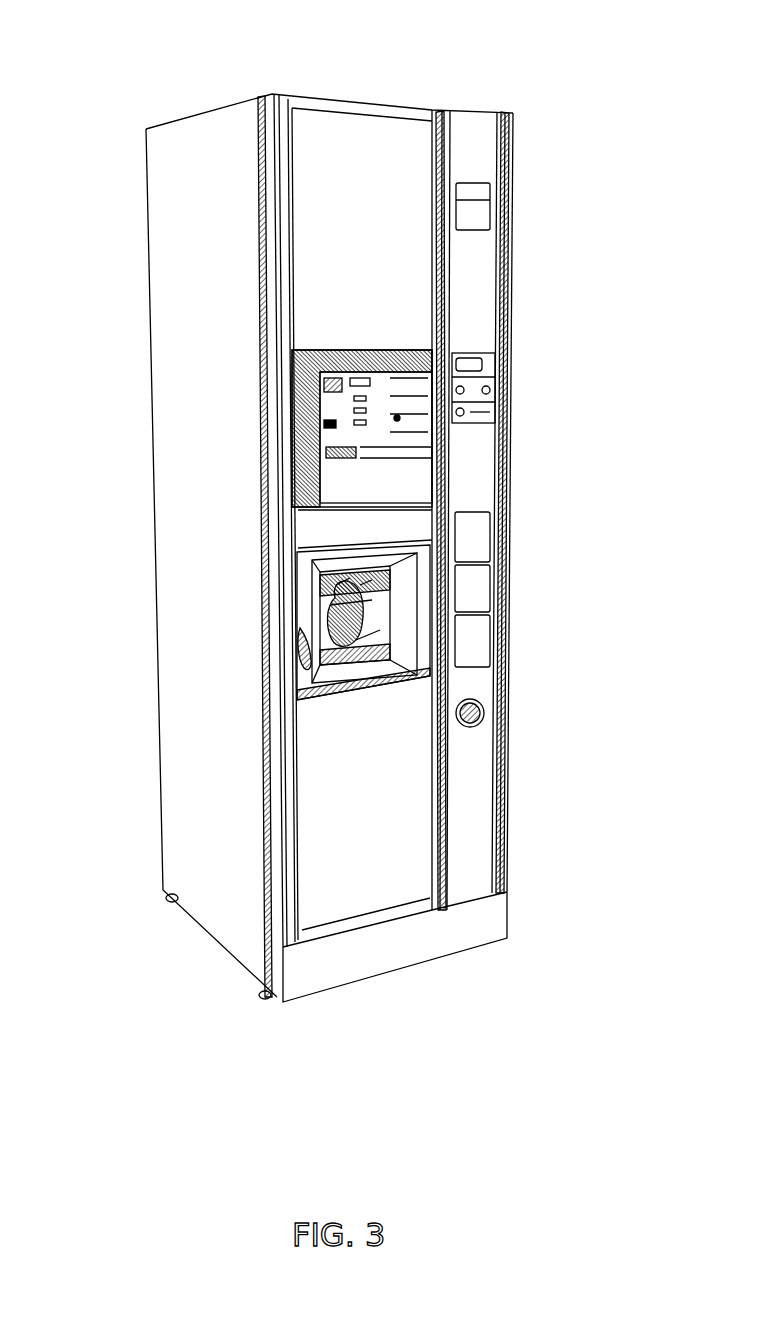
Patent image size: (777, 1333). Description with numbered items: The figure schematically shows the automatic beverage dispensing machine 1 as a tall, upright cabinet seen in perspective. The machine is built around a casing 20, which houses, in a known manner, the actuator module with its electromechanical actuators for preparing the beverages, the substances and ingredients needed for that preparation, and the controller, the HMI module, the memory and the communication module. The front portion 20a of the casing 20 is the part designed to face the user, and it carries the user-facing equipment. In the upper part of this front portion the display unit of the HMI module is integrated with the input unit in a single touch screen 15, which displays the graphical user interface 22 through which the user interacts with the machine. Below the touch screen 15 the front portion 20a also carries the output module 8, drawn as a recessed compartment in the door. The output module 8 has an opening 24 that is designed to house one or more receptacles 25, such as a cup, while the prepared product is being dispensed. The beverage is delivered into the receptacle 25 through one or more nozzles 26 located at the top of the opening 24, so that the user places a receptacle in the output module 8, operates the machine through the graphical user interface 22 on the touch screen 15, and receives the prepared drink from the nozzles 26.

The automatic beverage dispensing machine 1 is at (373, 508).
The casing 20 is at (170, 248).
The front portion 20a is at (475, 808).
The touch screen 15 is at (316, 428).
The graphical user interface 22 is at (377, 498).
The nozzles 26 is at (368, 578).
The opening 24 is at (330, 640).
The receptacles 25 is at (350, 662).
The output module 8 is at (310, 665).